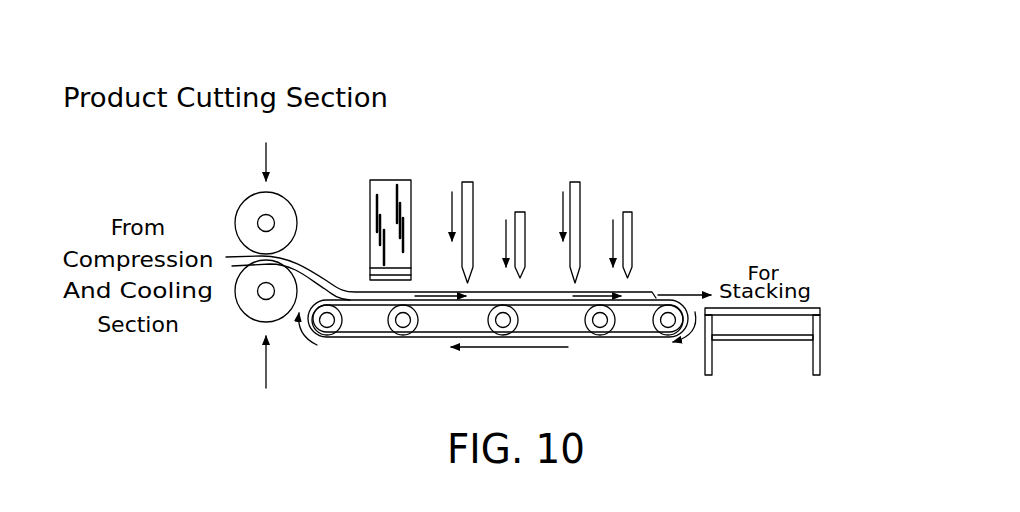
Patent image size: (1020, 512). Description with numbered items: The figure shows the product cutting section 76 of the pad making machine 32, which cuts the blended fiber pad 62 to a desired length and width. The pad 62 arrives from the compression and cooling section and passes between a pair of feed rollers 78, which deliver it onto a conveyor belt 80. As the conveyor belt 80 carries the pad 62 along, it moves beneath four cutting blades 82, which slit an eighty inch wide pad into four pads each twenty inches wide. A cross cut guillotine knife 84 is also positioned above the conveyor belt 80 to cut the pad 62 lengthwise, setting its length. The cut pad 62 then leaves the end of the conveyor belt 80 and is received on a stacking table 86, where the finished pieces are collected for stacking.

The pad making machine 32 is at (566, 97).
The product cutting section 76 is at (476, 119).
The feed rollers 78 is at (278, 208).
The blended fiber pad 62 is at (310, 278).
The conveyor belt 80 is at (437, 338).
The cross cut guillotine knife 84 is at (407, 210).
The cutting blades 82 is at (468, 213).
The stacking table 86 is at (818, 325).